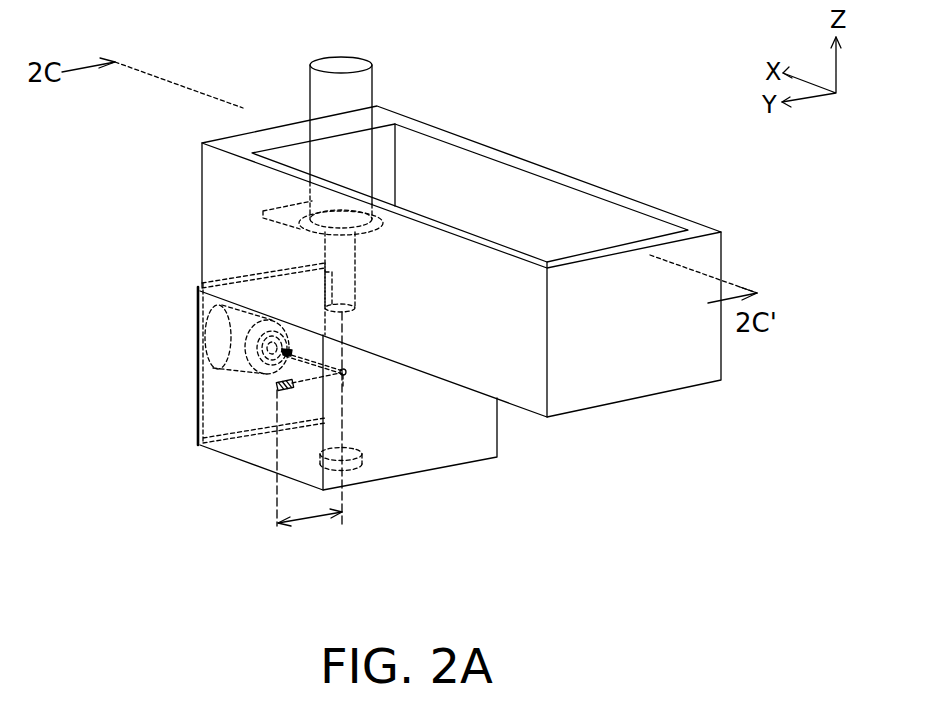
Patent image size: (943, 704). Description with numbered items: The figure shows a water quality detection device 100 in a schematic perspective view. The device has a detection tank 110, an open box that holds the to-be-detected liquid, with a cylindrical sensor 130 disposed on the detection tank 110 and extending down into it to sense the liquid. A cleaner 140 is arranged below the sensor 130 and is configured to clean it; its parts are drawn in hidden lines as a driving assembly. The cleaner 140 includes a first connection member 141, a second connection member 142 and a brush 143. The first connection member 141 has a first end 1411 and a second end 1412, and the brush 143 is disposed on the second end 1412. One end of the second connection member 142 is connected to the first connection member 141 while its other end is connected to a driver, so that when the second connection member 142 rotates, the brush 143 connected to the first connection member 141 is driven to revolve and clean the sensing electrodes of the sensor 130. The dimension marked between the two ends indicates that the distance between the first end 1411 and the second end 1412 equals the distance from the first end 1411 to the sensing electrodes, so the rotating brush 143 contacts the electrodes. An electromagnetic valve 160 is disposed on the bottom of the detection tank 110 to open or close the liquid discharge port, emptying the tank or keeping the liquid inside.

The water quality detection device 100 is at (502, 104).
The detection tank 110 is at (583, 182).
The sensor 130 is at (372, 82).
The cleaner 140 is at (253, 500).
The first connection member 141 is at (342, 376).
The second connection member 142 is at (285, 353).
The brush 143 is at (288, 357).
The first end 1411 is at (345, 375).
The second end 1412 is at (276, 388).
The electromagnetic valve 160 is at (362, 459).